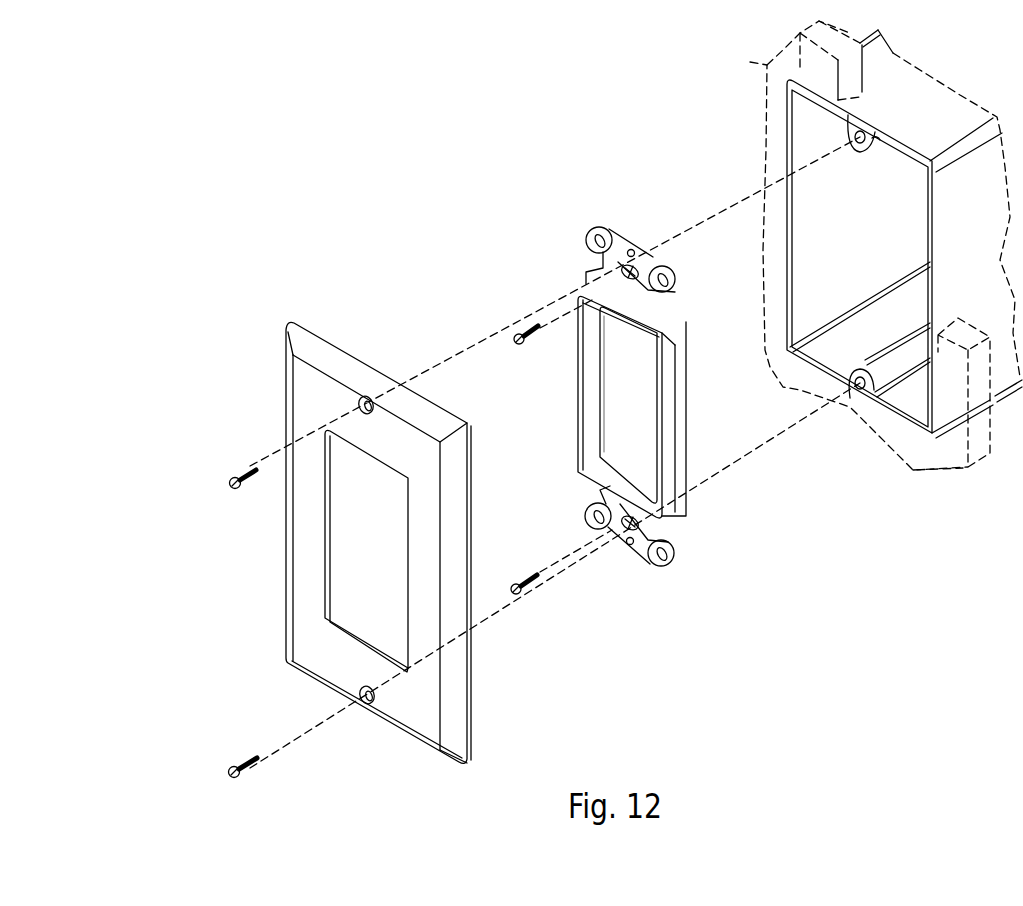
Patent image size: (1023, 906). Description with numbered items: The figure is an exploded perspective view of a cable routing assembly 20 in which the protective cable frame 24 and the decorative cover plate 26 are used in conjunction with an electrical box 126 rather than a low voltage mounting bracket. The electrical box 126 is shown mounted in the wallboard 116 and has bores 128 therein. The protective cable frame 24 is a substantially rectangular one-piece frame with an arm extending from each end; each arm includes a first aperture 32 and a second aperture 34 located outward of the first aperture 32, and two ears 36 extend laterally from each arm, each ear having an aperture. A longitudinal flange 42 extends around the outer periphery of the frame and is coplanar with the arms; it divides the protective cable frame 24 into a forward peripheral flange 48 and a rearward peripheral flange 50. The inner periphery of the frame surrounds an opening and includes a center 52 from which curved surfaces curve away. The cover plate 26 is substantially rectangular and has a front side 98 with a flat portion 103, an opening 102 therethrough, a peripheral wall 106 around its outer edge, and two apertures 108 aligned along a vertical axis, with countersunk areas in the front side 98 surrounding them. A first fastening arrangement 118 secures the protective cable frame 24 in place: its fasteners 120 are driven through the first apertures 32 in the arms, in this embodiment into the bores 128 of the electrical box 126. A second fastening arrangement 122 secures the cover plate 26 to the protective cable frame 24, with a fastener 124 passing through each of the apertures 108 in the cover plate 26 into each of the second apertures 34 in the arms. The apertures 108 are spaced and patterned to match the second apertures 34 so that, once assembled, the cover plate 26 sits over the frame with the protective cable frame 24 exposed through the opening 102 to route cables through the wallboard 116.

The cable routing assembly 20 is at (567, 399).
The protective cable frame 24 is at (596, 369).
The cover plate 26 is at (359, 542).
The first aperture 32 is at (589, 386).
The second aperture 34 is at (632, 248).
The ears 36 is at (592, 228).
The longitudinal flange 42 is at (675, 417).
The forward peripheral flange 48 is at (660, 425).
The rearward peripheral flange 50 is at (687, 378).
The center 52 is at (593, 357).
The front side 98 is at (300, 533).
The opening 102 is at (345, 572).
The flat portion 103 is at (330, 411).
The peripheral wall 106 is at (460, 687).
The apertures 108 is at (370, 412).
The wallboard 116 is at (797, 58).
The first fastening arrangement 118 is at (541, 478).
The fasteners 120 is at (526, 348).
The second fastening arrangement 122 is at (185, 605).
The fastener 124 is at (243, 473).
The electrical box 126 is at (829, 262).
The bores 128 is at (858, 150).